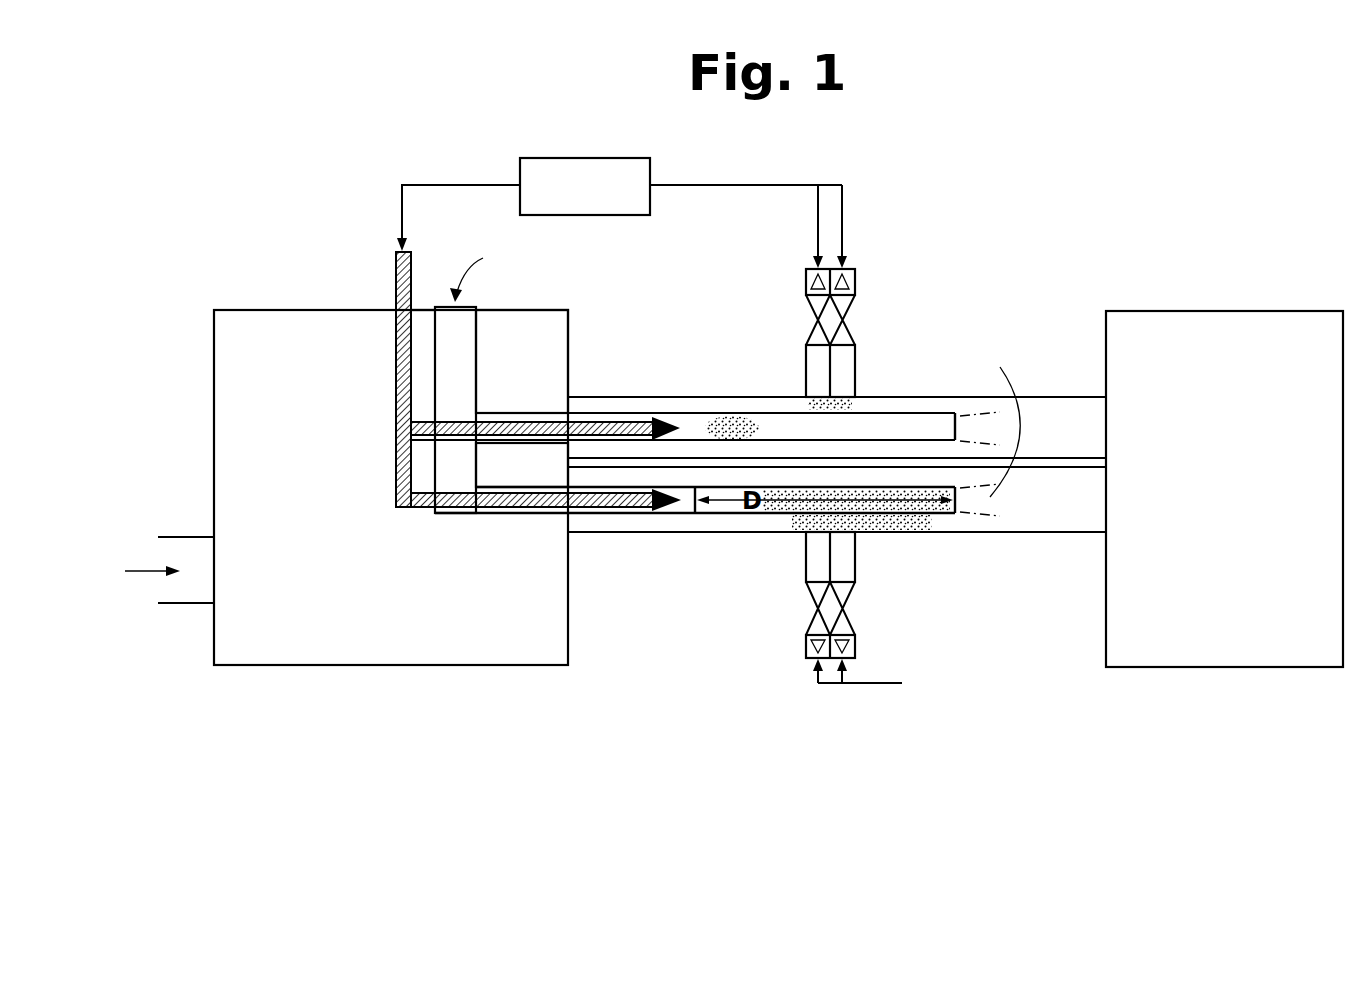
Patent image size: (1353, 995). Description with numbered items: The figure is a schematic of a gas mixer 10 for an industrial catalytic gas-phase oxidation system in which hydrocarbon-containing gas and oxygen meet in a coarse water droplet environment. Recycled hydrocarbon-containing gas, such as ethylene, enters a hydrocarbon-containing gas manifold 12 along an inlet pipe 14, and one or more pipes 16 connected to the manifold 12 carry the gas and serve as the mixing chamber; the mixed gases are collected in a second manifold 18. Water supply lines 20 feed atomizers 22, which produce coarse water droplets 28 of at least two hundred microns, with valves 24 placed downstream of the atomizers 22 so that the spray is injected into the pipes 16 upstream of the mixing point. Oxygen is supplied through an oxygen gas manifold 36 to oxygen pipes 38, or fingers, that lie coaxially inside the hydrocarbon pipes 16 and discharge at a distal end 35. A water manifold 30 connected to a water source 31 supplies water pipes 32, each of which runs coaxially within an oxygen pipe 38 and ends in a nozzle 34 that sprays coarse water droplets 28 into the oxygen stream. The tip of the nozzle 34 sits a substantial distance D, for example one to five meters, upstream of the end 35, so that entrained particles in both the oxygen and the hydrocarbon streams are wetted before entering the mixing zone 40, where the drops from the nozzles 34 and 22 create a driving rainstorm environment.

The gas mixer 10 is at (960, 135).
The hydrocarbon-containing gas manifold 12 is at (248, 310).
The inlet pipe 14 is at (183, 537).
The pipes 16 is at (1070, 397).
The second manifold 18 is at (1172, 310).
The water supply lines 20 is at (865, 683).
The atomizers (nozzles) 22 is at (856, 282).
The valves 24 is at (847, 316).
The water droplets 28 is at (812, 402).
The water manifold 30 is at (395, 262).
The water source 31 is at (520, 160).
The water pipes 32 is at (513, 421).
The nozzle 34 is at (667, 493).
The distal end 35 is at (960, 397).
The oxygen gas manifold 36 is at (477, 305).
The oxygen pipes 38 is at (552, 413).
The mixing zone 40 is at (985, 420).